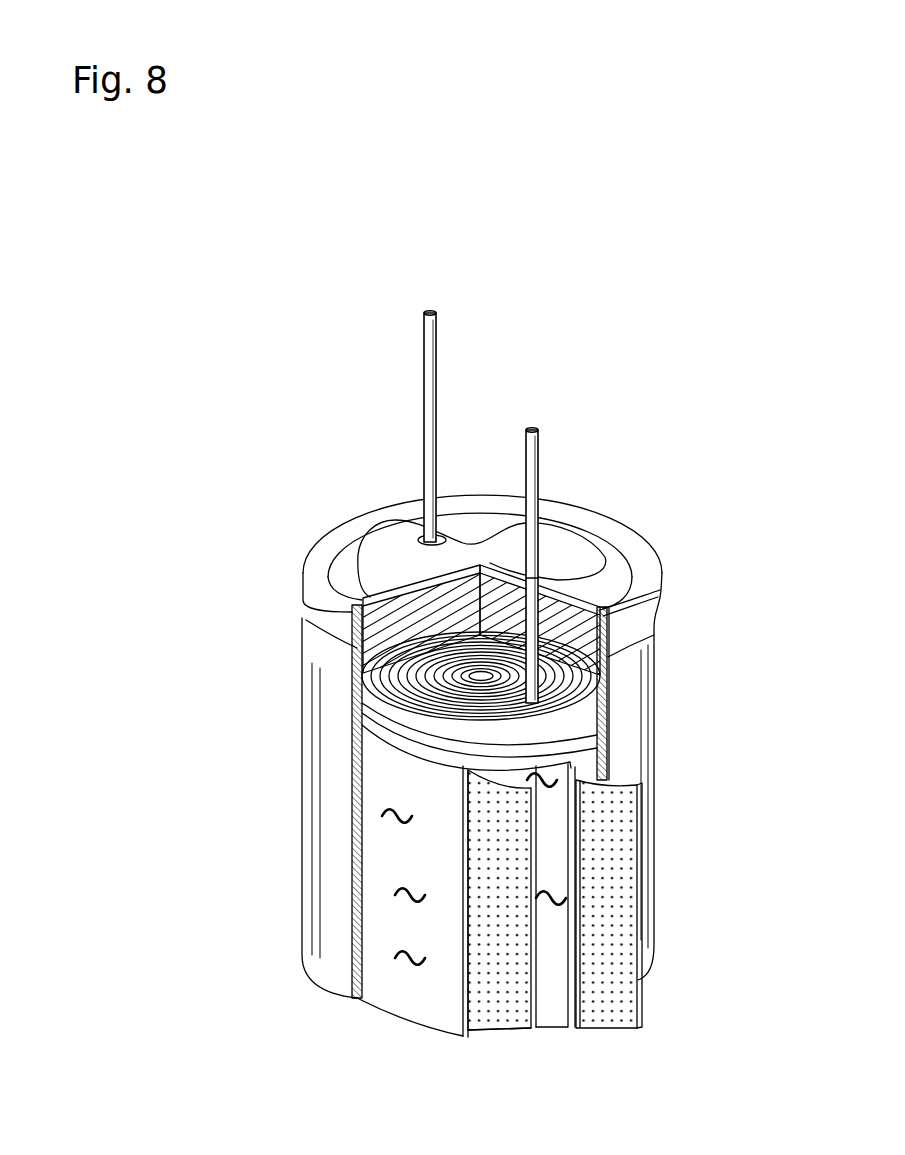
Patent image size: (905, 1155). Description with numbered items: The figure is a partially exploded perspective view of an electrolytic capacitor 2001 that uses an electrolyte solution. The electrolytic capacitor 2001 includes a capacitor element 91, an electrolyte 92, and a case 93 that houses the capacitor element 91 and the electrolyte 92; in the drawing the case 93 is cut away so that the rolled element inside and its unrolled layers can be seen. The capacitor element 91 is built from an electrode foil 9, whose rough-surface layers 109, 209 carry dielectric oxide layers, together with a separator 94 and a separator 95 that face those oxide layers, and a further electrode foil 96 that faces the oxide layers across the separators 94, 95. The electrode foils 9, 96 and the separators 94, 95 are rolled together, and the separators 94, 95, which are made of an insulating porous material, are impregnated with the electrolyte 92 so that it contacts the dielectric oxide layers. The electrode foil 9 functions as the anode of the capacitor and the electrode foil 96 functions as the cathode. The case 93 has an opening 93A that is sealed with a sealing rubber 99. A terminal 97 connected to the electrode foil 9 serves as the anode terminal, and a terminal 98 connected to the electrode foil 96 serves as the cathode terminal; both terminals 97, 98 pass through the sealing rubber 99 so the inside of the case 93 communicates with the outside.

The electrolytic capacitor 2001 is at (485, 714).
The terminal 97 is at (428, 392).
The terminal 98 is at (538, 457).
The sealing rubber 99 is at (592, 557).
The opening 93A is at (405, 632).
The case 93 is at (625, 697).
The capacitor element 91 is at (590, 740).
The rough-surface layer 109 is at (535, 819).
The electrolyte 92 is at (553, 903).
The separator 95 is at (410, 1005).
The rough-surface layer 209 is at (487, 1000).
The electrode foil 9 is at (500, 1020).
The separator 94 is at (550, 1020).
The electrode foil 96 is at (606, 1030).